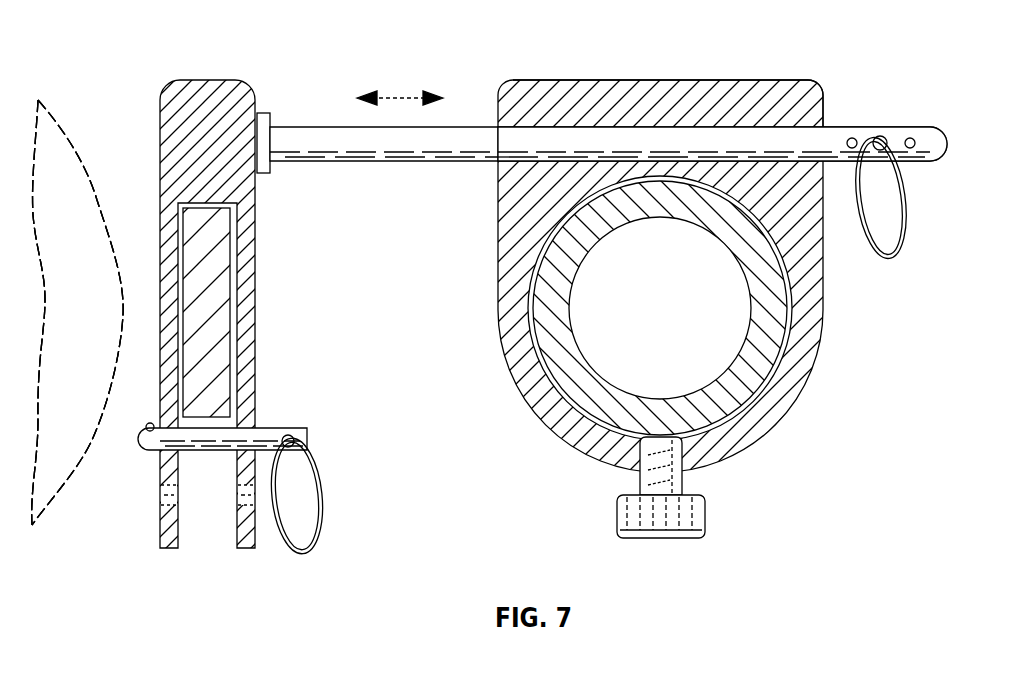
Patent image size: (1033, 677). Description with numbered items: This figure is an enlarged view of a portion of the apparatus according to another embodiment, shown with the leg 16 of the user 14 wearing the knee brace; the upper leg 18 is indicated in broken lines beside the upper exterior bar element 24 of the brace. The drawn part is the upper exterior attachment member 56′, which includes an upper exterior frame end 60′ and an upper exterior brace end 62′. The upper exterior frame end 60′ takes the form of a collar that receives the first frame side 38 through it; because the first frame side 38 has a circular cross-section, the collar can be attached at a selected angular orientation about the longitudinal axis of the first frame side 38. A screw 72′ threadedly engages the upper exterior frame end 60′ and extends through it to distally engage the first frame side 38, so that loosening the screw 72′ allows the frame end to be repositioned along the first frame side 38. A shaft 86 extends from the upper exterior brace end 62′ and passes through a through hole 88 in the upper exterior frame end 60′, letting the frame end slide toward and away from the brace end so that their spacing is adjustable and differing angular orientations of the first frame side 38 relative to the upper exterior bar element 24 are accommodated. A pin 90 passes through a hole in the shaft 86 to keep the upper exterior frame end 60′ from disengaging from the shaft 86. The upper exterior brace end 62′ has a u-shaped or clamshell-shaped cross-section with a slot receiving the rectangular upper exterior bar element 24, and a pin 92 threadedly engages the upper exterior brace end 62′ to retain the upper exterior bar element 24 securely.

The user 14 is at (52, 132).
The leg 16 is at (63, 158).
The upper leg 18 is at (78, 168).
The upper exterior bar element 24 is at (217, 372).
The first frame side 38 is at (553, 332).
The upper exterior attachment member 56′ is at (560, 83).
The upper exterior frame end 60′ is at (653, 83).
The upper exterior brace end 62′ is at (203, 85).
The screw 72′ is at (706, 515).
The shaft 86 is at (312, 137).
The through hole 88 is at (484, 112).
The pin 90 is at (883, 137).
The pin 92 is at (147, 443).